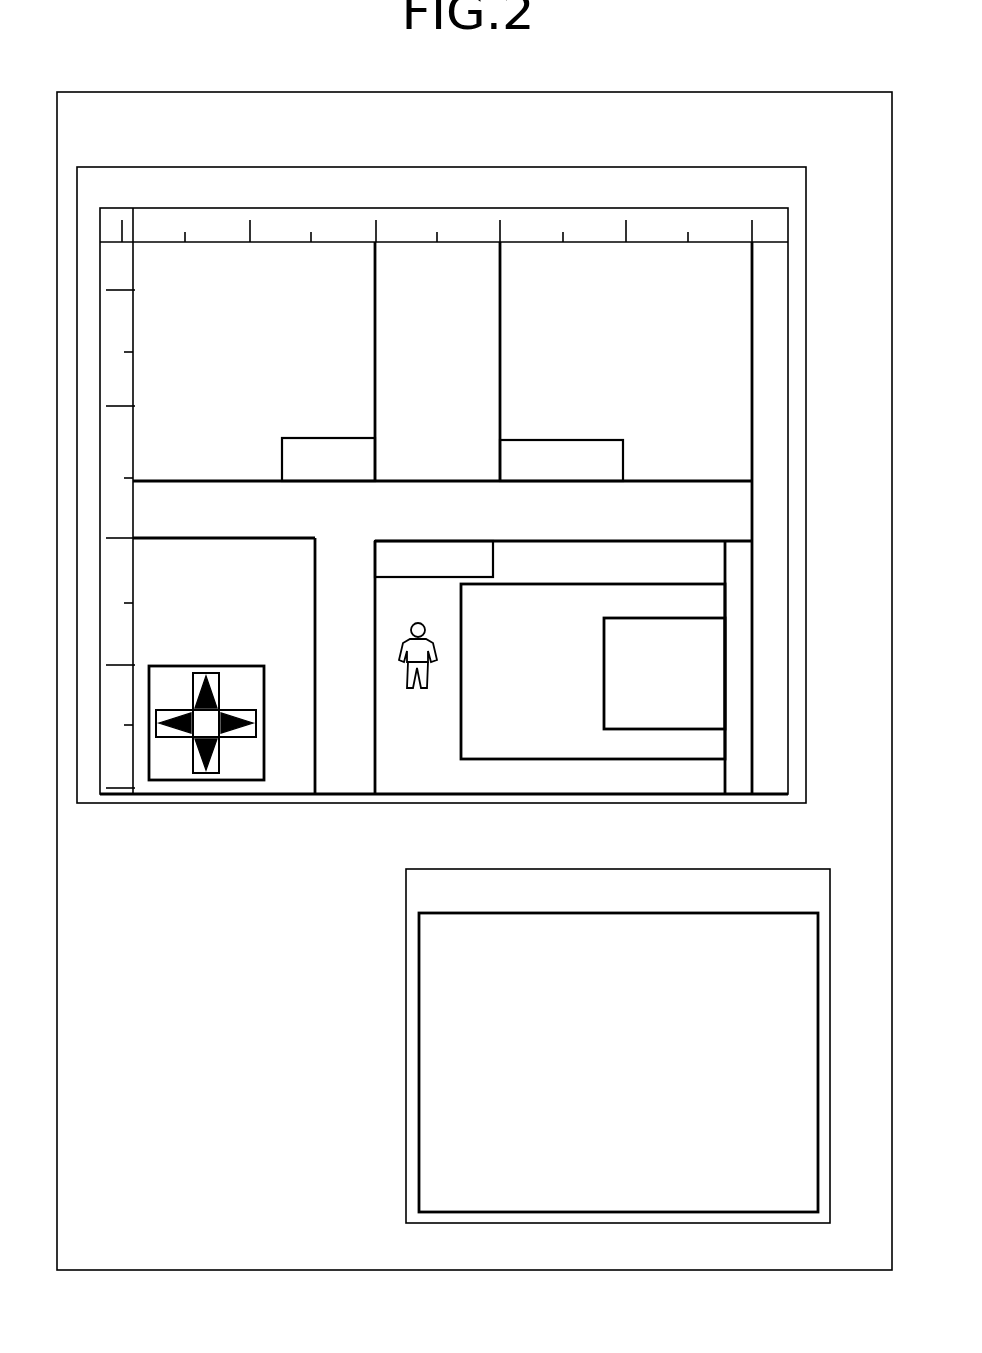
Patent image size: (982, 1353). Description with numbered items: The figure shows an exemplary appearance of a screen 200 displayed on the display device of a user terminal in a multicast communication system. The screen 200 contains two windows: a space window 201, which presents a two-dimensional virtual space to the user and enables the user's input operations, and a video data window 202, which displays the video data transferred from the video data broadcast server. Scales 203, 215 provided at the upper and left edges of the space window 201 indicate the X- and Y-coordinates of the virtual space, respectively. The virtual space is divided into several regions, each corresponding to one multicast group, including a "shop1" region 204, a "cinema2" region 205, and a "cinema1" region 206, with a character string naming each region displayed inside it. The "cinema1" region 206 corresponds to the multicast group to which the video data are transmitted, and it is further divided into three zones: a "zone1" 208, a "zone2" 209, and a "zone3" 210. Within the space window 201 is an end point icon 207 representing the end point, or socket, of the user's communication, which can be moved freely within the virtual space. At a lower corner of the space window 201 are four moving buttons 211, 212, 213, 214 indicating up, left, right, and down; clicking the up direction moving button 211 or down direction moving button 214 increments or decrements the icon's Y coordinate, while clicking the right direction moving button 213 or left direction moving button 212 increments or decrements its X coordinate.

The screen 200 is at (753, 92).
The space window 201 is at (673, 168).
The video data window 202 is at (406, 955).
The scale 203 is at (780, 211).
The "shop1" region 204 is at (375, 333).
The "cinema2" region 205 is at (500, 380).
The "cinema1" region 206 is at (520, 540).
The end point icon 207 is at (403, 653).
The "zone1" 208 is at (699, 720).
The "zone2" 209 is at (570, 745).
The "zone3" 210 is at (473, 780).
The up direction moving button 211 is at (203, 673).
The left direction moving button 212 is at (157, 723).
The right direction moving button 213 is at (242, 710).
The down direction moving button 214 is at (213, 773).
The scale 215 is at (103, 790).